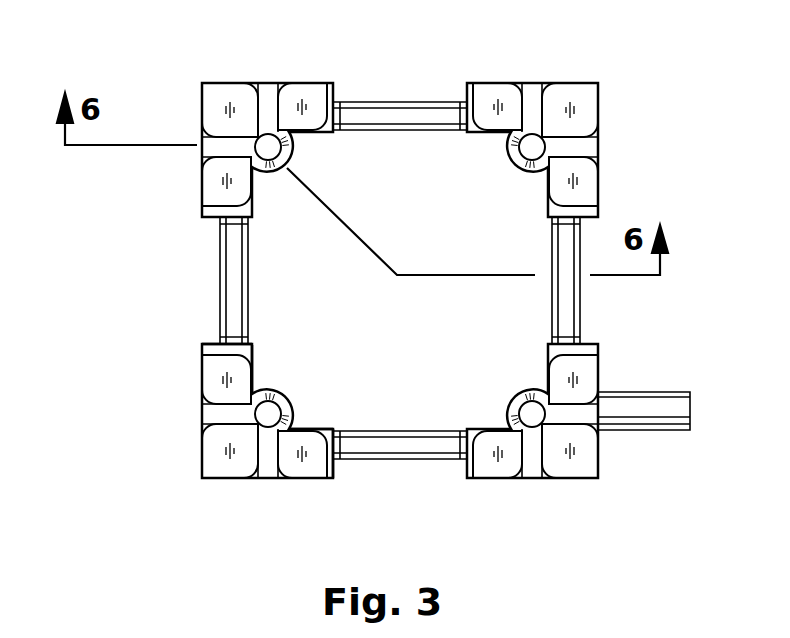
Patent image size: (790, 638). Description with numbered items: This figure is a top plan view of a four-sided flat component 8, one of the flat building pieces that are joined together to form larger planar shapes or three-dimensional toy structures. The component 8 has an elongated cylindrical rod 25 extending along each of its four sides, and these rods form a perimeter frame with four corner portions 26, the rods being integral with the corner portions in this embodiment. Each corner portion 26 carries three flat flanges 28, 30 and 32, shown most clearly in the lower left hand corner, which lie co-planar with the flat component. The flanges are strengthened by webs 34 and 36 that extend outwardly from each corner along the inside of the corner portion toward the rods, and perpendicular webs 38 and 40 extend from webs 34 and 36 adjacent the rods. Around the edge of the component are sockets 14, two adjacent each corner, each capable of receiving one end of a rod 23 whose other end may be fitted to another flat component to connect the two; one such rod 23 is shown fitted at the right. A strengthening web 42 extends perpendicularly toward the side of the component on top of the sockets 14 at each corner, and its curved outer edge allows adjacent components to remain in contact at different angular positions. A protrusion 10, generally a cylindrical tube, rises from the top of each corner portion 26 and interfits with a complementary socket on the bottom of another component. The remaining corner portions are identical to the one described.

The four-sided flat component 8 is at (464, 50).
The protrusion 10 is at (536, 142).
The socket 14 is at (533, 84).
The rod 23 is at (625, 405).
The elongated rod 25 is at (413, 98).
The corner portion 26 is at (222, 98).
The flat flange 28 is at (220, 370).
The flat flange 30 is at (210, 470).
The flat flange 32 is at (310, 467).
The web 34 is at (251, 372).
The web 36 is at (305, 423).
The perpendicular web 38 is at (250, 344).
The perpendicular web 40 is at (335, 425).
The strengthening web 42 is at (217, 413).